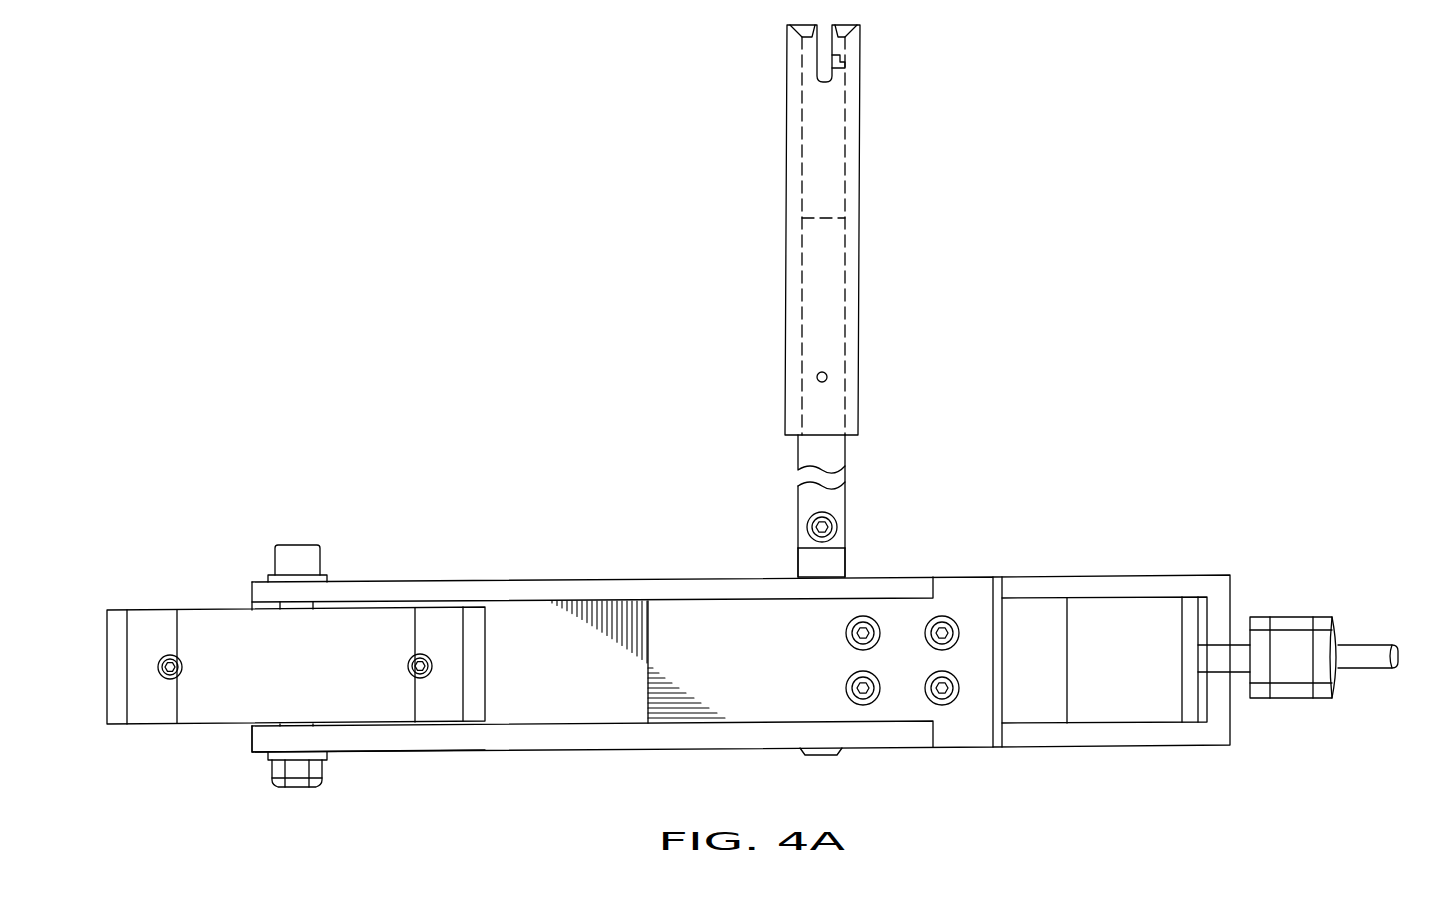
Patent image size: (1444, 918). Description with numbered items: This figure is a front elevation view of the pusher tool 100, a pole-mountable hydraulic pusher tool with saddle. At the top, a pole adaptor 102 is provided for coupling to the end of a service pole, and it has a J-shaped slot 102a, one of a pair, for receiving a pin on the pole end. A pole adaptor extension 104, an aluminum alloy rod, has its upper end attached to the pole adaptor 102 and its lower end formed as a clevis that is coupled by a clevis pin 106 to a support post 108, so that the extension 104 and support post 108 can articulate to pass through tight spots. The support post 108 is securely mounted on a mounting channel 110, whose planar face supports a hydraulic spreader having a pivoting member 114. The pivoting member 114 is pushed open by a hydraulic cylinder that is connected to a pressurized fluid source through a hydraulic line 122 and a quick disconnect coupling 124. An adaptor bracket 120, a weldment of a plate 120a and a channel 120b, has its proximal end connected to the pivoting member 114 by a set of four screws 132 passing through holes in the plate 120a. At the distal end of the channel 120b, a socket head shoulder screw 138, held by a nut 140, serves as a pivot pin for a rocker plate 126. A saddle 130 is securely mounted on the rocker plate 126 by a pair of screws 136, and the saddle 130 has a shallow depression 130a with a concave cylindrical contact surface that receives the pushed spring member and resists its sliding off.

The pusher tool 100 is at (672, 460).
The pole adaptor 102 is at (787, 178).
The J-shaped slot 102a is at (828, 75).
The pole adaptor extension 104 is at (807, 492).
The clevis pin 106 is at (806, 522).
The support post 108 is at (838, 561).
The mounting channel 110 is at (1120, 567).
The pivoting member 114 is at (1102, 700).
The adaptor bracket 120 is at (690, 578).
The plate 120a is at (753, 712).
The channel 120b is at (565, 715).
The hydraulic line 122 is at (1360, 672).
The quick disconnect coupling 124 is at (1296, 700).
The rocker plate 126 is at (473, 666).
The saddle 130 is at (365, 620).
The shallow depression 130a is at (357, 697).
The screws 132 is at (928, 688).
The screws 136 is at (410, 667).
The socket head shoulder screw 138 is at (273, 557).
The nut 140 is at (268, 770).